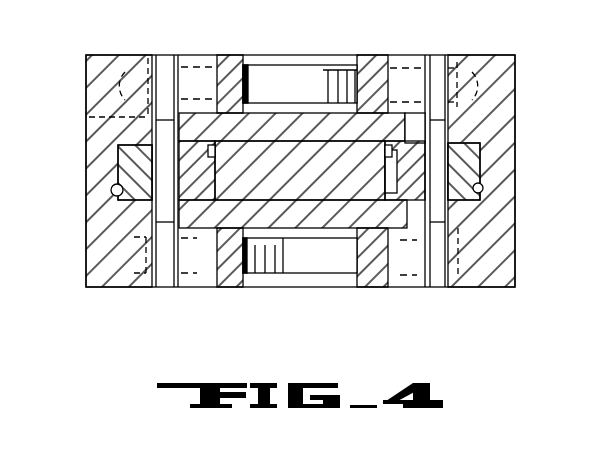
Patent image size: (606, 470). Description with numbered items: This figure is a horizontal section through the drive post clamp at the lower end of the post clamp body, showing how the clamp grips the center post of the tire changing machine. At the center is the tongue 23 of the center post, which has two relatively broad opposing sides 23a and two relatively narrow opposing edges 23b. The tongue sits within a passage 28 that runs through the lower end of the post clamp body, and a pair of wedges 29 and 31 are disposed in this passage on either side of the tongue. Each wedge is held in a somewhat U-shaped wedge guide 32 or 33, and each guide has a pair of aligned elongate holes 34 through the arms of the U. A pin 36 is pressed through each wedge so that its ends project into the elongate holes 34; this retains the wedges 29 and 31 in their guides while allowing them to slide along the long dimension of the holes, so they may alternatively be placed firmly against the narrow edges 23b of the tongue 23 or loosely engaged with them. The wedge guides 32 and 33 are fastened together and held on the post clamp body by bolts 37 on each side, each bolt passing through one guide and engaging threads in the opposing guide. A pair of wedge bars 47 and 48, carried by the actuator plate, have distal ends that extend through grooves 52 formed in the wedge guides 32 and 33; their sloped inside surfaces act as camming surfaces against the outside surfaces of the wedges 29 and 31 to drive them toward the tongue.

The tongue 23 is at (280, 184).
The broad opposing sides 23a is at (265, 112).
The narrow edges 23b is at (208, 166).
The passage 28 is at (321, 146).
The wedge 29 is at (423, 140).
The wedge 31 is at (184, 148).
The wedge guide 32 is at (497, 262).
The wedge guide 33 is at (92, 255).
The elongate holes 34 is at (209, 54).
The pin 36 is at (158, 55).
The bolts 37 is at (340, 72).
The wedge bar 47 is at (448, 172).
The wedge bar 48 is at (120, 180).
The grooves 52 is at (120, 200).